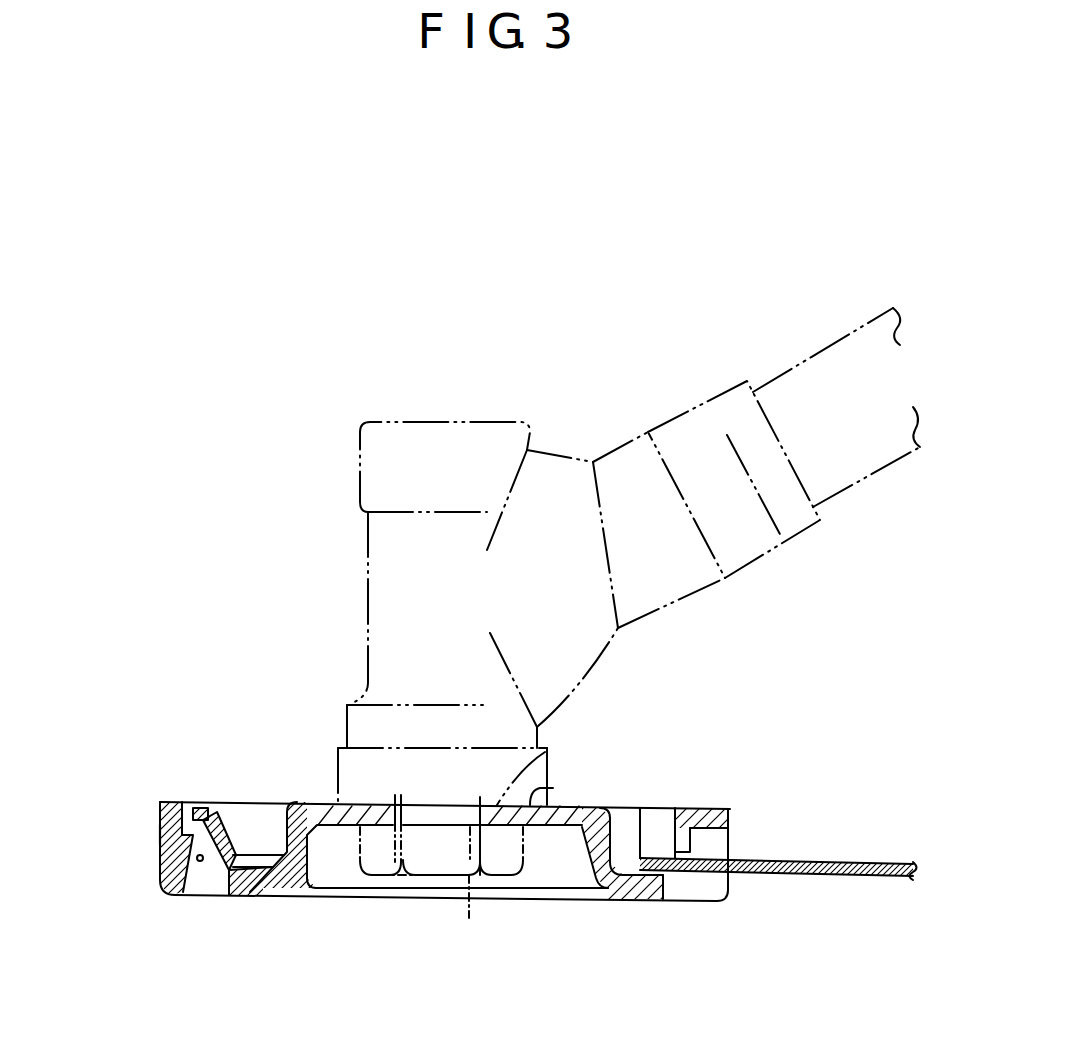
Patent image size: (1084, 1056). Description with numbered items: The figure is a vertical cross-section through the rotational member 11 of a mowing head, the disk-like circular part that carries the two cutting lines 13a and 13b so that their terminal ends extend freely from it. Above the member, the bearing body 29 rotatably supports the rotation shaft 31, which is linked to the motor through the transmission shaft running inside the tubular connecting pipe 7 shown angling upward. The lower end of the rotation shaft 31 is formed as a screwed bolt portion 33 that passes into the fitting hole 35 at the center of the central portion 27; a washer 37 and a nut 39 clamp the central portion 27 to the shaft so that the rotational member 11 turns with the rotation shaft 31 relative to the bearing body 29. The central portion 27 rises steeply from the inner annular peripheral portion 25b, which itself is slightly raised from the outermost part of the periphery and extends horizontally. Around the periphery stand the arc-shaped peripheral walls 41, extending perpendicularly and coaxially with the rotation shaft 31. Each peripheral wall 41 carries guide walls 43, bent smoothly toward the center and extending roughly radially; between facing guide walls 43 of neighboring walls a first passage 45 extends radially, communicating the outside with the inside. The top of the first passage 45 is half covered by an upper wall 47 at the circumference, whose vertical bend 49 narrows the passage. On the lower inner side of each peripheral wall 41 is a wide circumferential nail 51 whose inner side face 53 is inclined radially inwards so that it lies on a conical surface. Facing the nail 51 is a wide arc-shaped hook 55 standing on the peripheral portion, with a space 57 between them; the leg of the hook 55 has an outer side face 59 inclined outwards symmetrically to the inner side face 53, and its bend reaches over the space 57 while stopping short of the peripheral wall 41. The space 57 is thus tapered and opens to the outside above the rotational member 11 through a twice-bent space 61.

The connecting pipe 7 is at (853, 330).
The rotational member 11 is at (745, 802).
The cutting line 13a is at (205, 872).
The cutting line 13b is at (828, 862).
The inner annular peripheral portion 25b is at (247, 896).
The central portion 27 is at (315, 806).
The bearing body 29 is at (373, 547).
The rotation shaft 31 is at (362, 706).
The bolt portion 33 is at (540, 756).
The fitting hole 35 is at (397, 823).
The washer 37 is at (553, 788).
The nut 39 is at (469, 912).
The peripheral wall 41 is at (160, 805).
The guide wall 43 is at (661, 816).
The first passage 45 is at (665, 876).
The upper wall 47 is at (711, 813).
The vertical bend 49 is at (690, 847).
The nail 51 is at (161, 835).
The inner side face 53 is at (162, 870).
The hook 55 is at (236, 808).
The space 57 is at (180, 896).
The outer side face 59 is at (208, 810).
The twice-bent space 61 is at (196, 808).